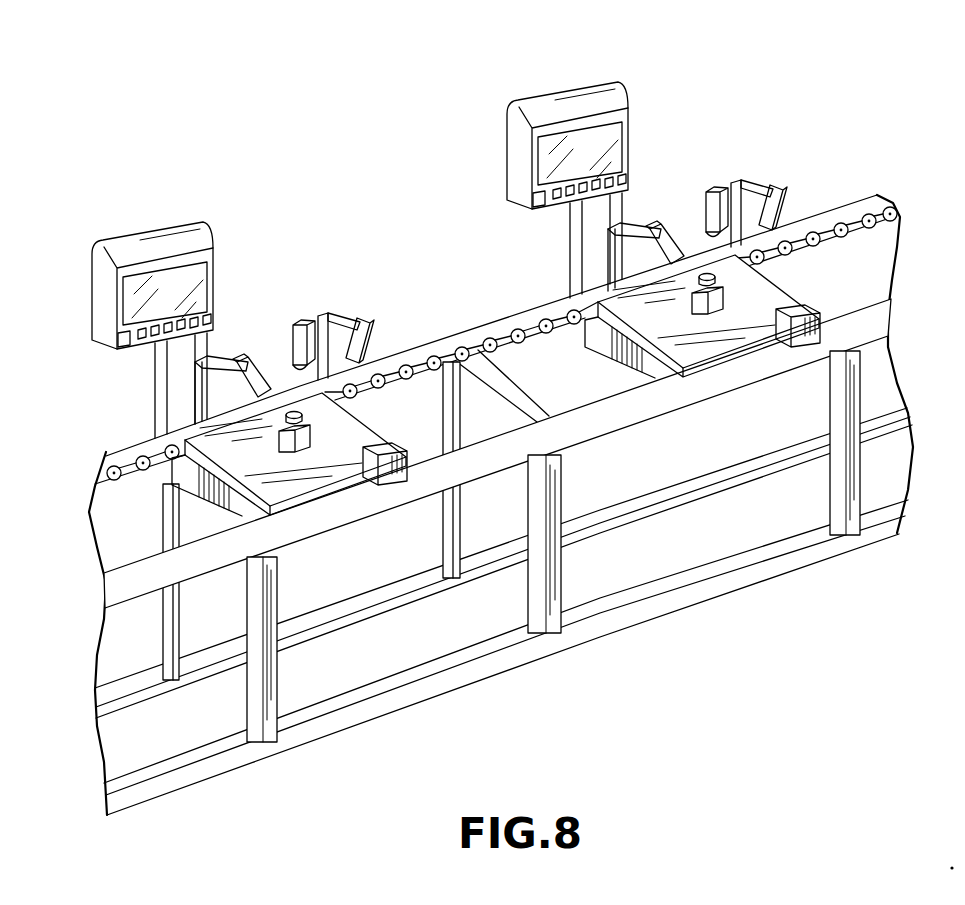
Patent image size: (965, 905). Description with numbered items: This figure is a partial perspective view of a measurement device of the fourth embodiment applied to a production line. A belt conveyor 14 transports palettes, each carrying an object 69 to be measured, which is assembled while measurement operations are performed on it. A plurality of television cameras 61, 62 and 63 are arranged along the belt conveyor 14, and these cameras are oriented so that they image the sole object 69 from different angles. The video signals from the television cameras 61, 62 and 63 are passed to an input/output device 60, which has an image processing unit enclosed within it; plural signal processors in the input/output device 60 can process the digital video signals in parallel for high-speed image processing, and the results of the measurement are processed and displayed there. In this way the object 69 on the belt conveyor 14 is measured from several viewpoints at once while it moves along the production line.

The belt conveyor 14 is at (116, 580).
The input/output device 60 is at (139, 243).
The television camera 61 is at (258, 367).
The television camera 62 is at (311, 320).
The television camera 63 is at (367, 321).
The object 69 is at (319, 433).